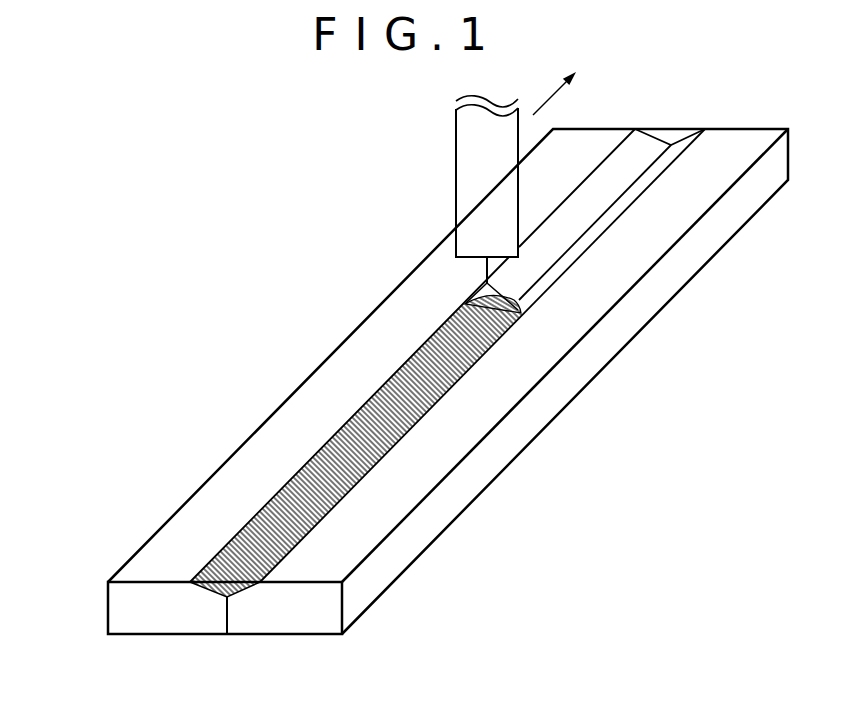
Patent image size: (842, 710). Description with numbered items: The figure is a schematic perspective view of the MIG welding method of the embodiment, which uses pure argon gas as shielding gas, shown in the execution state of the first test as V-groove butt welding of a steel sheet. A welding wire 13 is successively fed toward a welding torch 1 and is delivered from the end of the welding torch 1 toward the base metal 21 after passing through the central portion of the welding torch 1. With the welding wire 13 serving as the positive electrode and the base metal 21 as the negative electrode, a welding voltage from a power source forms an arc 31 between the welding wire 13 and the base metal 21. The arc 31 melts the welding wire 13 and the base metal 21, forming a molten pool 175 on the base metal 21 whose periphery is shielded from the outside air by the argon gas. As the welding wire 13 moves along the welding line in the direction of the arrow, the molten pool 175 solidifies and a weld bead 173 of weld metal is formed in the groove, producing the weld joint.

The welding torch 1 is at (473, 177).
The welding wire 13 is at (485, 273).
The base metal 21 is at (155, 611).
The arc 31 is at (480, 297).
The weld bead 173 is at (395, 391).
The molten pool 175 is at (505, 333).